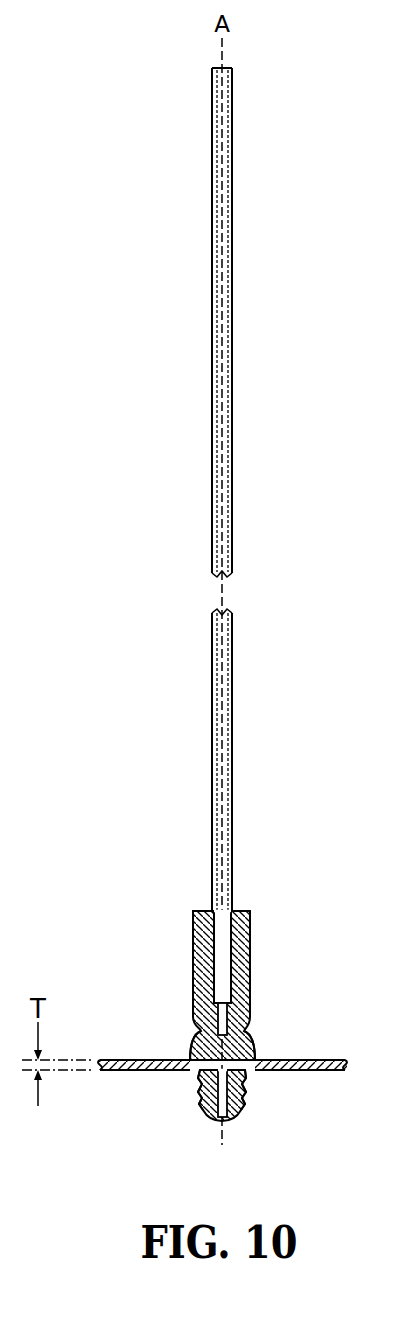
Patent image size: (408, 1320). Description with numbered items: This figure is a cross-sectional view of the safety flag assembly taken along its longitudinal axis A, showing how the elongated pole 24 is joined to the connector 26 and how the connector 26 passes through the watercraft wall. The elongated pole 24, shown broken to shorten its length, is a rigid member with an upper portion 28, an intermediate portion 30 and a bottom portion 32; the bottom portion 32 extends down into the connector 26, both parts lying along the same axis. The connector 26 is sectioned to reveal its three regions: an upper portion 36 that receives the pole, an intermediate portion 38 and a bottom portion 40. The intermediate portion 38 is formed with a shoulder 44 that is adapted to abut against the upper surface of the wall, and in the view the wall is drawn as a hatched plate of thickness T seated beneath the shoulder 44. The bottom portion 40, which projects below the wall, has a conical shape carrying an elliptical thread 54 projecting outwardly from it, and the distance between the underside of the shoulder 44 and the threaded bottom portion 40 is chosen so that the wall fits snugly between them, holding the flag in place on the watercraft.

The elongated pole 24 is at (241, 339).
The connector 26 is at (208, 991).
The upper portion 28 is at (211, 248).
The intermediate portion 30 is at (233, 548).
The bottom portion 32 is at (233, 917).
The upper portion 36 is at (274, 910).
The intermediate portion 38 is at (274, 1017).
The bottom portion 40 is at (274, 1075).
The shoulder 44 is at (197, 1046).
The elliptical thread 54 is at (200, 1098).